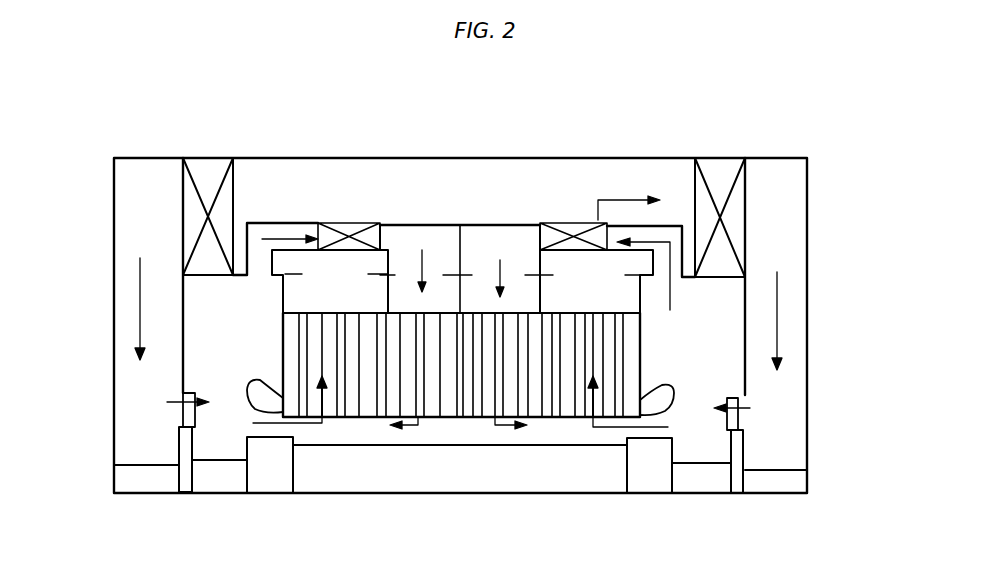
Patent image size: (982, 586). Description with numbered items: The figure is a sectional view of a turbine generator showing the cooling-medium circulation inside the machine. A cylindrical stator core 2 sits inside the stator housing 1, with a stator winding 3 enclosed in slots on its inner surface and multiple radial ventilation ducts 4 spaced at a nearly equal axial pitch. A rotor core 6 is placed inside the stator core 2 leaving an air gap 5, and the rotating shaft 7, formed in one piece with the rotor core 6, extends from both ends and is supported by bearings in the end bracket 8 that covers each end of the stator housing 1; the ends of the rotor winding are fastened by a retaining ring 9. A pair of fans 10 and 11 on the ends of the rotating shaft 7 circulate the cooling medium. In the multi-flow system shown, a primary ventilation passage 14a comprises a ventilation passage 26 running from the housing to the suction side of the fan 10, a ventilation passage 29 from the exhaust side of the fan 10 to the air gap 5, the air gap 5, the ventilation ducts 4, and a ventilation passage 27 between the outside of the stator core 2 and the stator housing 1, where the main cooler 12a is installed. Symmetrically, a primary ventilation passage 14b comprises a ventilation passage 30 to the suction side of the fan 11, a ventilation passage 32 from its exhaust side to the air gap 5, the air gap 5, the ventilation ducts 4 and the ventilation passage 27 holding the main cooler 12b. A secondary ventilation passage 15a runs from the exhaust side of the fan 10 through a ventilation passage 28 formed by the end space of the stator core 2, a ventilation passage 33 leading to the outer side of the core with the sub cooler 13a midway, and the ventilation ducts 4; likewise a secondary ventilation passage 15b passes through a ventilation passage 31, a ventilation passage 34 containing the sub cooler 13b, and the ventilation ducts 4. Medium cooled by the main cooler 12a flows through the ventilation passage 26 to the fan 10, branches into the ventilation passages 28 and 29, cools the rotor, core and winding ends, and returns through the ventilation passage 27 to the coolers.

The stator housing 1 is at (543, 165).
The stator core 2 is at (470, 318).
The stator winding 3 is at (672, 392).
The ventilation ducts 4 is at (363, 410).
The air gap 5 is at (375, 425).
The rotor core 6 is at (493, 467).
The rotating shaft 7 is at (152, 475).
The end bracket 8 is at (114, 214).
The retaining ring 9 is at (275, 472).
The fan 10 is at (183, 408).
The fan 11 is at (743, 423).
The main cooler 12a is at (211, 175).
The main cooler 12b is at (727, 182).
The sub cooler 13a is at (365, 220).
The sub cooler 13b is at (585, 221).
The primary ventilation passage 14a is at (140, 390).
The primary ventilation passage 14b is at (777, 287).
The secondary ventilation passage 15a is at (217, 323).
The secondary ventilation passage 15b is at (678, 327).
The ventilation passage 26 is at (133, 443).
The ventilation passage 27 is at (477, 182).
The ventilation passage 28 is at (192, 377).
The ventilation passage 29 is at (230, 432).
The ventilation passage 30 is at (783, 392).
The ventilation passage 31 is at (707, 337).
The ventilation passage 32 is at (710, 443).
The ventilation passage 33 is at (288, 230).
The ventilation passage 34 is at (675, 220).